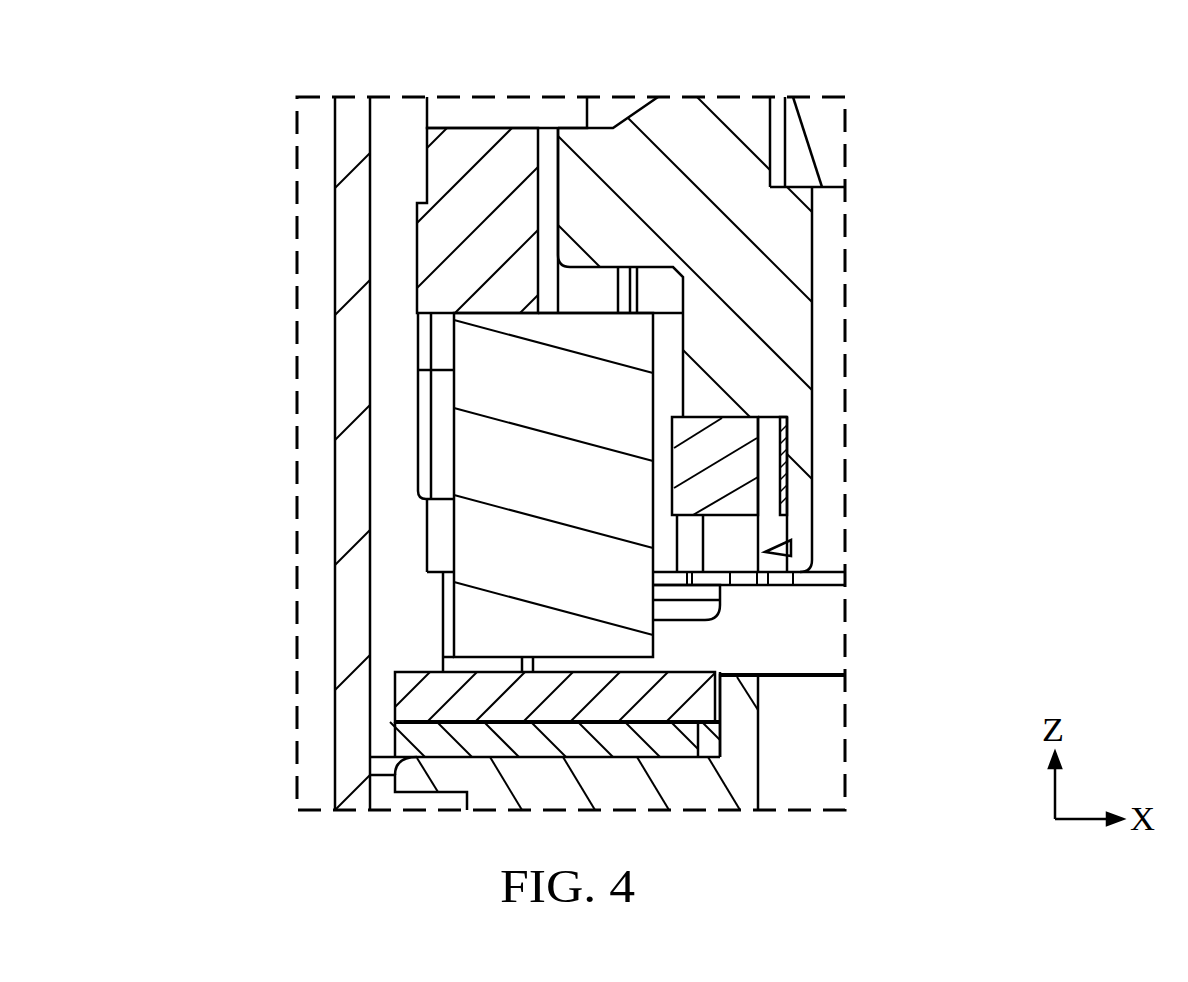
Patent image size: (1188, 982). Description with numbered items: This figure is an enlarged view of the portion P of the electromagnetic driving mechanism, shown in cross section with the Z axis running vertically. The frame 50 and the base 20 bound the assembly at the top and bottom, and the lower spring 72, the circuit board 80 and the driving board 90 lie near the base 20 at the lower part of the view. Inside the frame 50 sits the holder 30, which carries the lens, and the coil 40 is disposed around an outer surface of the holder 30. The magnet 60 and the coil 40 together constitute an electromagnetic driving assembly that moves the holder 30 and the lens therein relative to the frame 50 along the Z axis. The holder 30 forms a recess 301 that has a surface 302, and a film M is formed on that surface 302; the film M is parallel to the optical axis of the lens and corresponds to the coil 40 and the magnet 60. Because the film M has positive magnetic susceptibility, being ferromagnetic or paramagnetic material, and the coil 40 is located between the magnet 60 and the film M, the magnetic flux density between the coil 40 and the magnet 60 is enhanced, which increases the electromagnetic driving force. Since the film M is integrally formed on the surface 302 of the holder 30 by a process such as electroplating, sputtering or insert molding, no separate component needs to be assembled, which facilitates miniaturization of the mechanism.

The portion P is at (207, 58).
The base 20 is at (480, 776).
The holder 30 is at (697, 150).
The recess 301 is at (765, 440).
The surface 302 is at (790, 551).
The coil 40 is at (715, 498).
The film M is at (787, 436).
The frame 50 is at (487, 150).
The magnet 60 is at (542, 452).
The lower spring 72 is at (807, 580).
The circuit board 80 is at (480, 736).
The driving board 90 is at (480, 690).